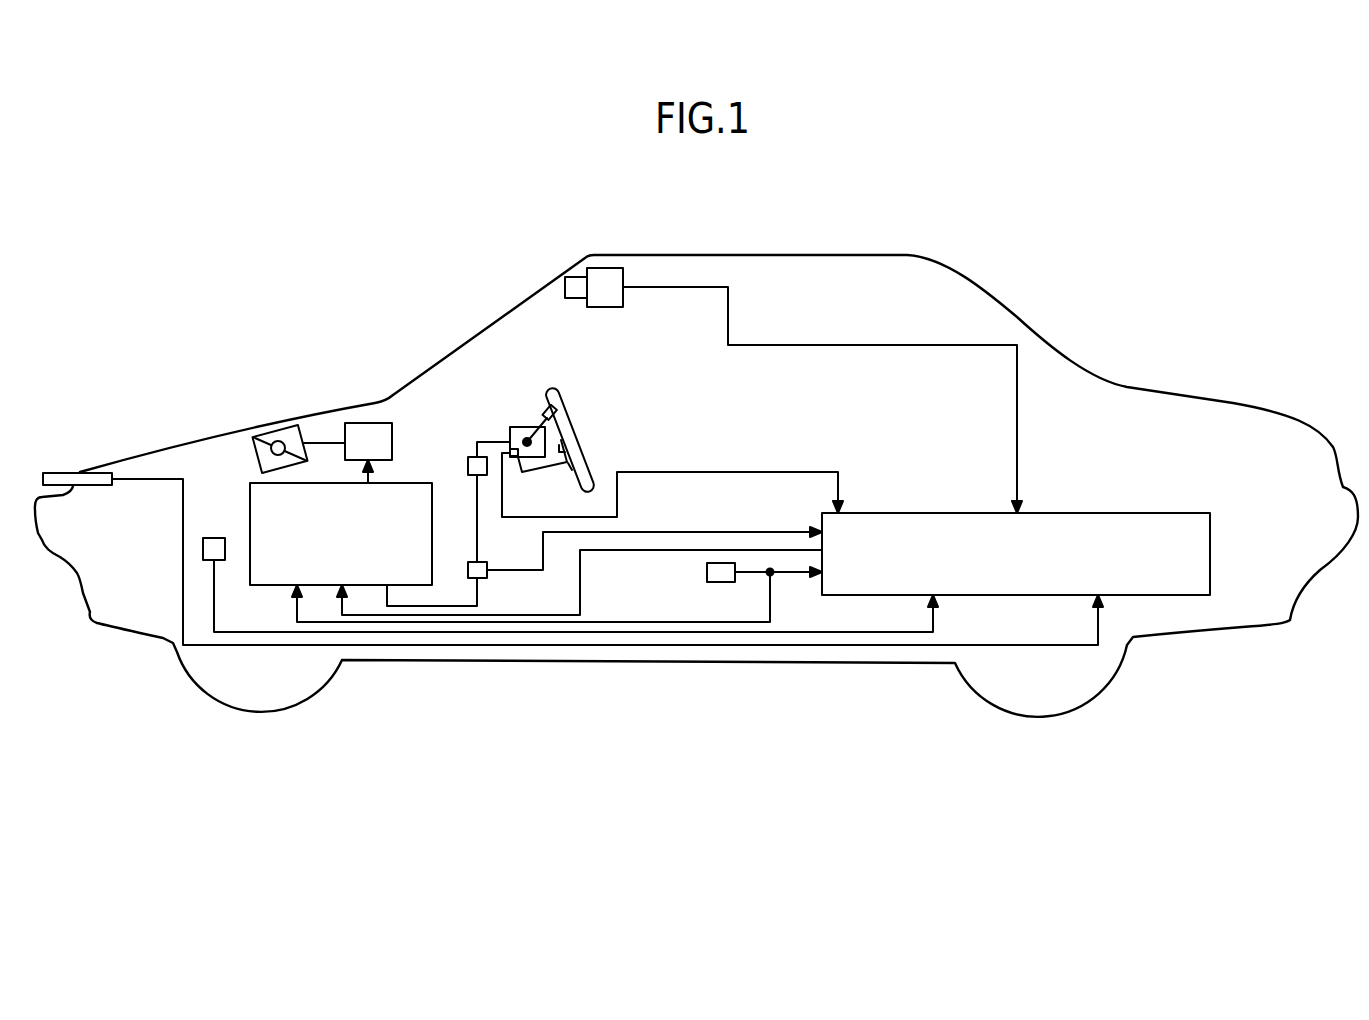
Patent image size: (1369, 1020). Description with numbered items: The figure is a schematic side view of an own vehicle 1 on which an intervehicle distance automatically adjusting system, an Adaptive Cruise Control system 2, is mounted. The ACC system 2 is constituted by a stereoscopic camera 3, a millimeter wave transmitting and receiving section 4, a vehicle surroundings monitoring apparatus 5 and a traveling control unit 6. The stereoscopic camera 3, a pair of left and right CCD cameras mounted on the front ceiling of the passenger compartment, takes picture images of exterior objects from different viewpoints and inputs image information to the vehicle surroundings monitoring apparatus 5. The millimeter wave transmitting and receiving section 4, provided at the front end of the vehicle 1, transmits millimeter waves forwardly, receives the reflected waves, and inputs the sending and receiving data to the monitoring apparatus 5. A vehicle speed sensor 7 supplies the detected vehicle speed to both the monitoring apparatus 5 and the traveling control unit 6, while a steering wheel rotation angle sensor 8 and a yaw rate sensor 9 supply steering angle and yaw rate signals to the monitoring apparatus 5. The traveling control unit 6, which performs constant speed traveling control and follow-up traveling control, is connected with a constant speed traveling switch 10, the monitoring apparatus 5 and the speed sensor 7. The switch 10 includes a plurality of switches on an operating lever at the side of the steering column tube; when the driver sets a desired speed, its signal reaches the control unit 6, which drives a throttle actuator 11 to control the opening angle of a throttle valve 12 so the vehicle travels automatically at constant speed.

The vehicle 1 is at (1047, 330).
The intervehicle distance automatically adjusting system 2 is at (880, 260).
The stereoscopic camera 3 is at (602, 268).
The millimeter wave transmitting and receiving section 4 is at (68, 473).
The vehicle surroundings monitoring apparatus 5 is at (1097, 513).
The traveling control unit 6 is at (418, 483).
The vehicle speed sensor 7 is at (717, 583).
The steering wheel rotation angle sensor 8 is at (482, 578).
The yaw rate sensor 9 is at (213, 538).
The constant speed traveling switch 10 is at (537, 427).
The throttle actuator 11 is at (357, 423).
The throttle valve 12 is at (273, 426).